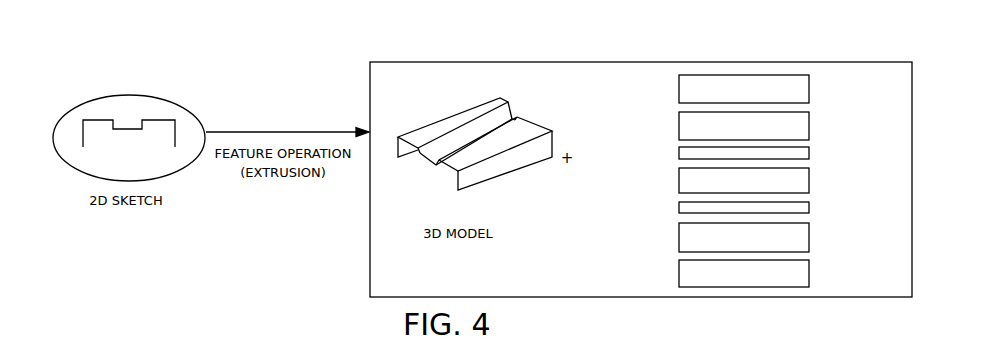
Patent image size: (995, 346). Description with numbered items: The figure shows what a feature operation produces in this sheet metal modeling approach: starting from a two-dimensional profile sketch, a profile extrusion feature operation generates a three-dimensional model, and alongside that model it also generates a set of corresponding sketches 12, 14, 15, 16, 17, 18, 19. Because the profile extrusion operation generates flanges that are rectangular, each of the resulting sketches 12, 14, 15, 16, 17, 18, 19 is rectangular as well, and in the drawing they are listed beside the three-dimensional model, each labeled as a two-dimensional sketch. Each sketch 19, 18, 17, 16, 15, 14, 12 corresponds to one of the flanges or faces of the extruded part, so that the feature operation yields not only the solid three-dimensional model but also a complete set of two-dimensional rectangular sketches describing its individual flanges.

The sketch 12 is at (500, 168).
The sketch 14 is at (531, 126).
The sketch 15 is at (440, 167).
The sketch 16 is at (432, 164).
The sketch 17 is at (420, 154).
The sketch 18 is at (492, 104).
The sketch 19 is at (402, 151).